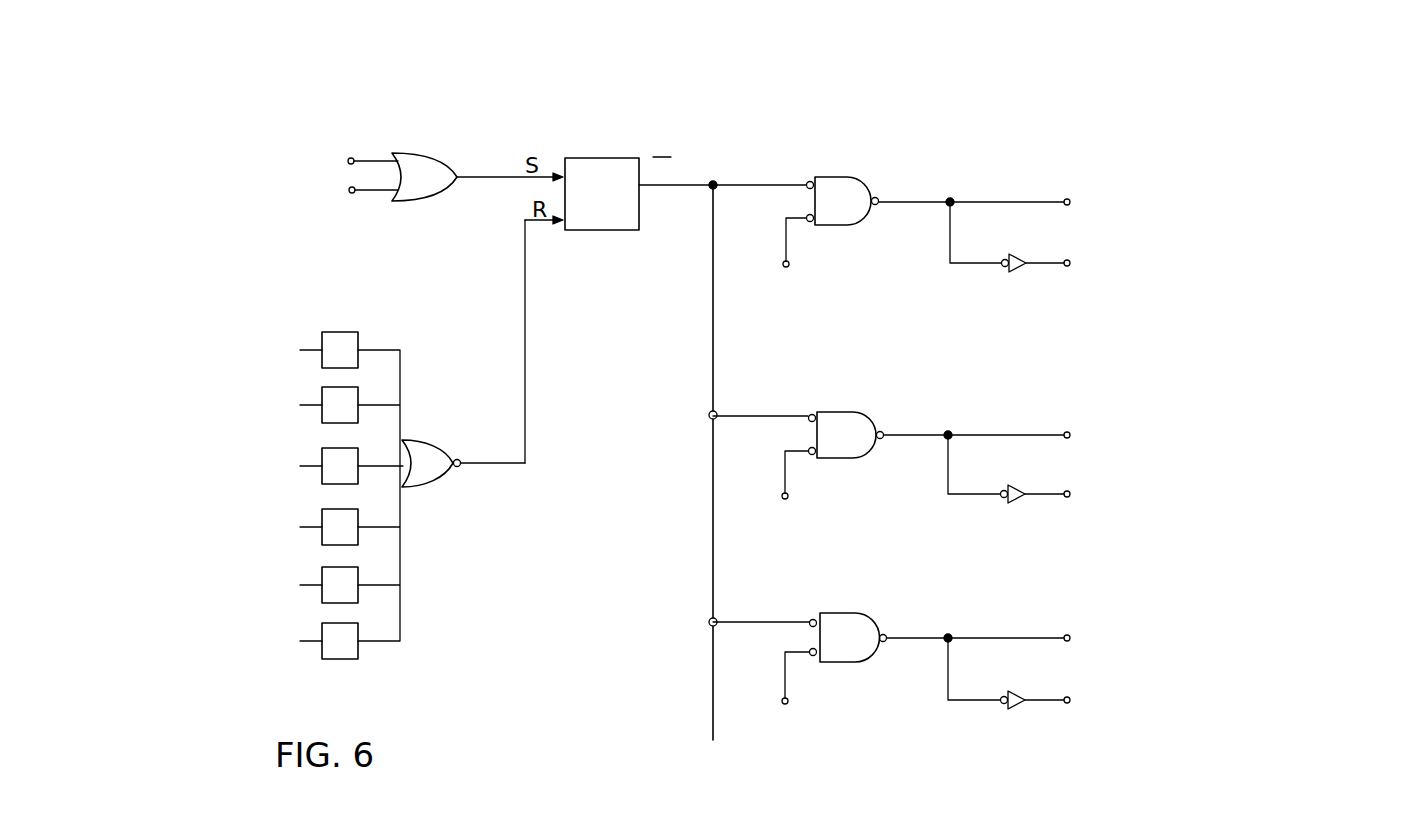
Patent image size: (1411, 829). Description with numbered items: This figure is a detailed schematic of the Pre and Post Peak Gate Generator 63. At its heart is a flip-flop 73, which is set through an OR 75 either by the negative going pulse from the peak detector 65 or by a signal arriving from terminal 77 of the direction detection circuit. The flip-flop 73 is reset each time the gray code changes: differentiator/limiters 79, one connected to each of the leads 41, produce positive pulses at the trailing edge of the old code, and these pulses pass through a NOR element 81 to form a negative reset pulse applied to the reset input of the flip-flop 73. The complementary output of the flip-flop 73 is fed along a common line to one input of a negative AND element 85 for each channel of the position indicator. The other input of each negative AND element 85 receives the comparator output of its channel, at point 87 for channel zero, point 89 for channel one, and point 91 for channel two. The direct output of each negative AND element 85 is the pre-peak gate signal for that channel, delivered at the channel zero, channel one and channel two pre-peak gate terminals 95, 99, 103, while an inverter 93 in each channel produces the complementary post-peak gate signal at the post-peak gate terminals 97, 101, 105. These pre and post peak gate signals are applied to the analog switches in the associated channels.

The leads 41 is at (311, 403).
The Pre and Post Peak Gate Generator 63 is at (611, 418).
The peak detector 65 is at (315, 159).
The flip-flop 73 is at (622, 158).
The OR 75 is at (443, 156).
The terminal of the Direction Detection Circuit 77 is at (355, 189).
The differentiator/limiters 79 is at (347, 333).
The NOR element 81 is at (428, 440).
The negative AND element 85 is at (855, 177).
The point for channel 0 87 is at (841, 258).
The point for channel 1 89 is at (850, 494).
The point for channel 2 91 is at (857, 696).
The inverter 93 is at (1021, 256).
The channel 0 pre-peak gate terminal 95 is at (1127, 205).
The channel 0 post-peak gate terminal 97 is at (1170, 240).
The channel 1 pre-peak gate terminal 99 is at (1118, 439).
The channel 1 post-peak gate terminal 101 is at (1164, 473).
The channel 2 pre-peak gate terminal 103 is at (1129, 645).
The channel 2 post-peak gate terminal 105 is at (1165, 679).